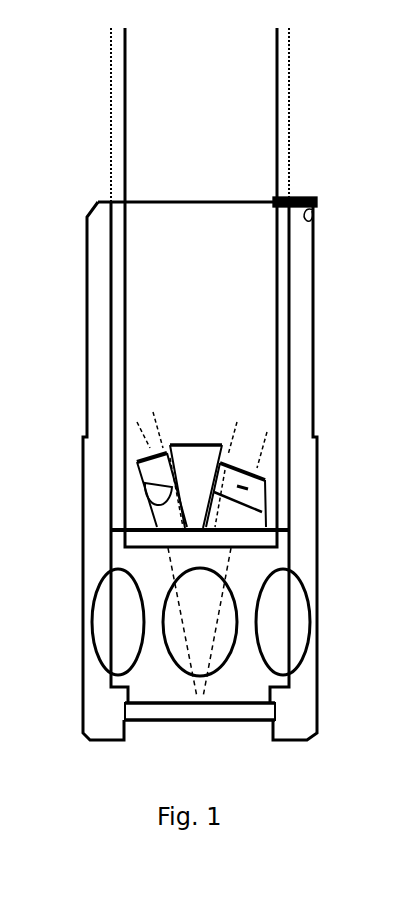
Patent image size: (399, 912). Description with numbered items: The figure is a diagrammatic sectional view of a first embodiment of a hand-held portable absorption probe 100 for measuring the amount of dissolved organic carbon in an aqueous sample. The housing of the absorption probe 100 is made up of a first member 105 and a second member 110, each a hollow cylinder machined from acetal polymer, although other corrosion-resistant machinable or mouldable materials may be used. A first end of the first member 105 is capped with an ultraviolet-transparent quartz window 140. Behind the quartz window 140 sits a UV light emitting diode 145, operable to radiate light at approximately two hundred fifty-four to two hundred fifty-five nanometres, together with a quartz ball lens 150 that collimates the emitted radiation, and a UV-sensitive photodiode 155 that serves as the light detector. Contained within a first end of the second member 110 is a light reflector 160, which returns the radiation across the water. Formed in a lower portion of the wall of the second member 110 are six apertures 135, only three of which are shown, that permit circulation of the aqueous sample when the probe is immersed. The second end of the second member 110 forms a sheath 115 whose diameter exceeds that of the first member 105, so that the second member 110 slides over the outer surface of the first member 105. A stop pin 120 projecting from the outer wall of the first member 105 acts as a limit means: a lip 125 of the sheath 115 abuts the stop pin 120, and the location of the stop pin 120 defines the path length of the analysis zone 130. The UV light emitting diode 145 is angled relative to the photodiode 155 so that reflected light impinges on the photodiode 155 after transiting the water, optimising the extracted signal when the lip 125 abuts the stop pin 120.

The absorption probe 100 is at (72, 788).
The first member 105 is at (279, 100).
The second member 110 is at (305, 557).
The sheath 115 is at (305, 293).
The stop pin 120 is at (317, 200).
The lip 125 is at (312, 222).
The analysis zone 130 is at (72, 542).
The apertures 135 is at (291, 629).
The quartz window 140 is at (280, 528).
The UV light emitting diode 145 is at (148, 448).
The quartz ball lens 150 is at (158, 485).
The UV-sensitive photodiode 155 is at (262, 498).
The light reflector 160 is at (240, 722).